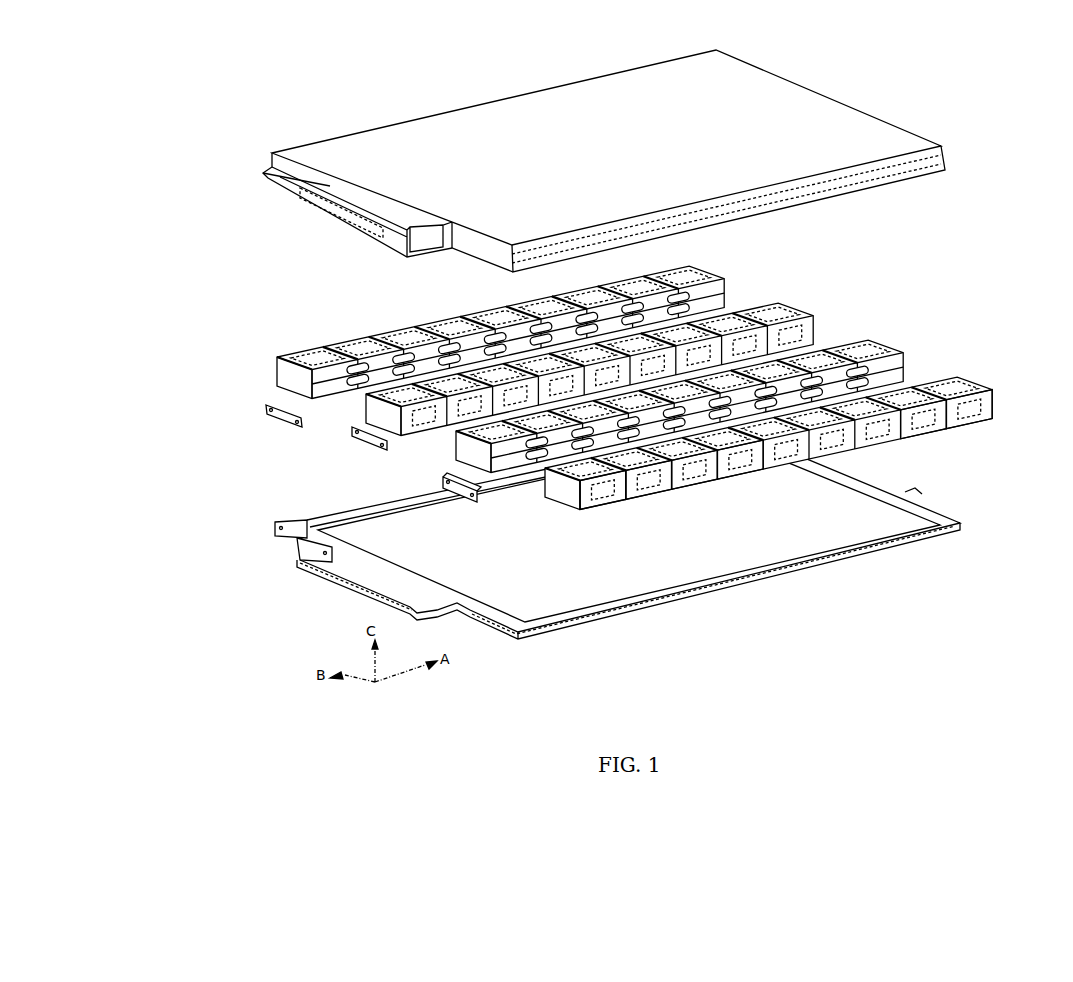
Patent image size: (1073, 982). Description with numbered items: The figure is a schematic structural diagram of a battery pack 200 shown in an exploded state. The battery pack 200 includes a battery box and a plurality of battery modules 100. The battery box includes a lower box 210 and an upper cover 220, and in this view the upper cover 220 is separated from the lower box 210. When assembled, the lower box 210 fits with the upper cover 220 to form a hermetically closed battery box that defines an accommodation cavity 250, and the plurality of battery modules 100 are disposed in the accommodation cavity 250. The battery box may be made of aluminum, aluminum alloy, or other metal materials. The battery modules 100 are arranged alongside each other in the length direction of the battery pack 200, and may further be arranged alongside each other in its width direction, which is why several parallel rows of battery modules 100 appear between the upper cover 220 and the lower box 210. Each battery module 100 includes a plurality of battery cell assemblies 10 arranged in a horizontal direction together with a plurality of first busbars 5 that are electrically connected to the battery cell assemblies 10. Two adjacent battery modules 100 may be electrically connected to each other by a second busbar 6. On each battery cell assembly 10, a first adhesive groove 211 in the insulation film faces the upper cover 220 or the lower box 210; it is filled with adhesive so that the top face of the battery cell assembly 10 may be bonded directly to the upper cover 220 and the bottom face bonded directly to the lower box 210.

The battery pack 200 is at (180, 431).
The upper cover 220 is at (328, 185).
The lower box 210 is at (297, 560).
The accommodation cavity 250 is at (353, 545).
The battery module 100 is at (672, 392).
The battery cell assembly 10 is at (603, 504).
The first busbar 5 is at (360, 352).
The second busbar 6 is at (285, 425).
The first adhesive groove 211 is at (902, 412).